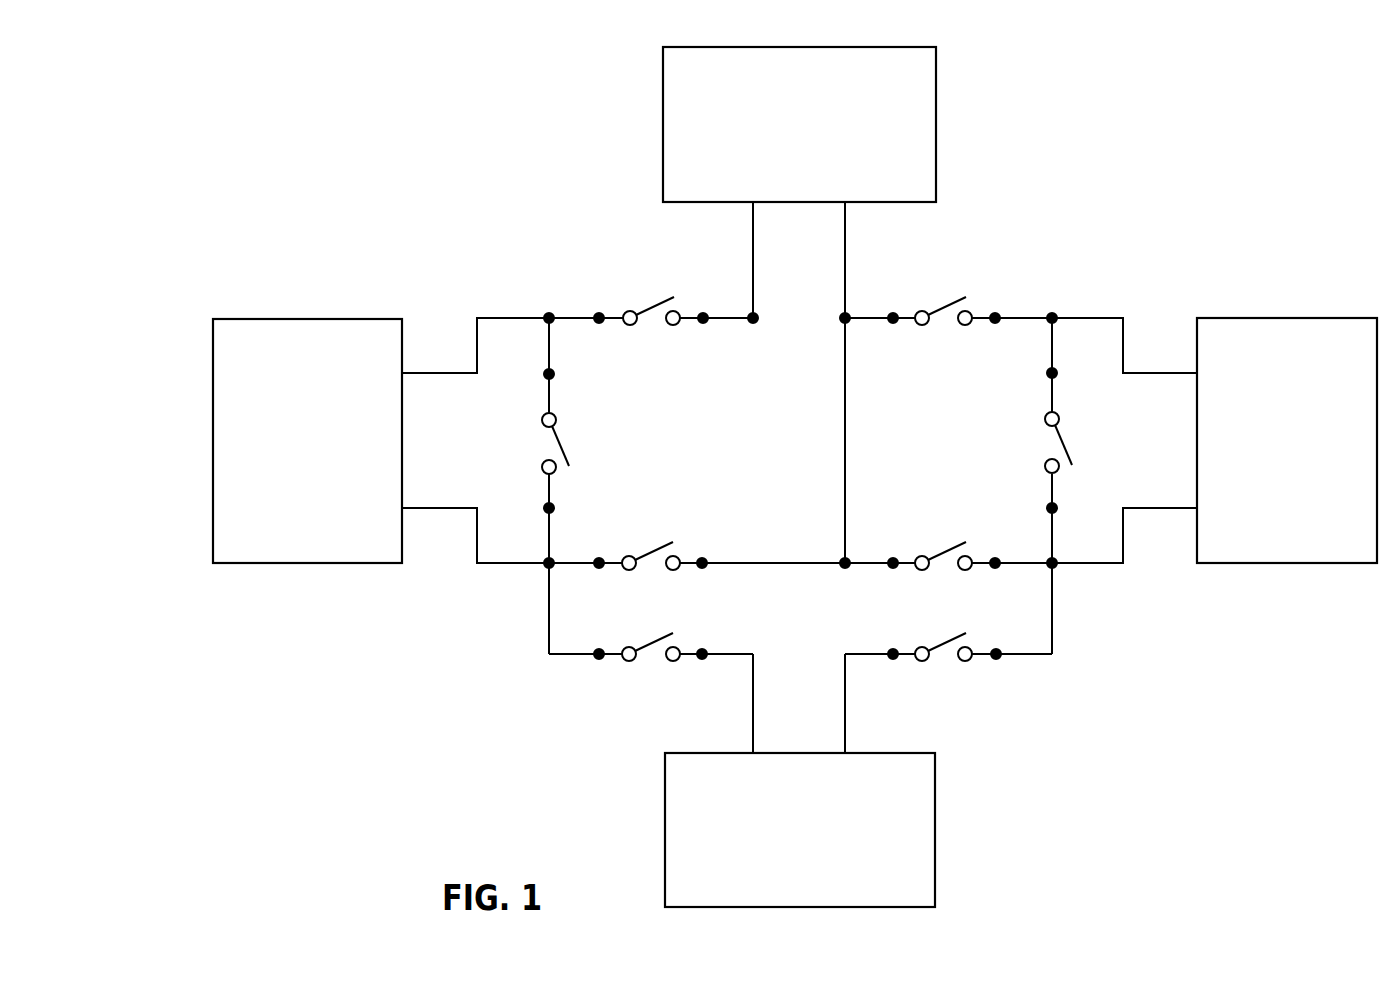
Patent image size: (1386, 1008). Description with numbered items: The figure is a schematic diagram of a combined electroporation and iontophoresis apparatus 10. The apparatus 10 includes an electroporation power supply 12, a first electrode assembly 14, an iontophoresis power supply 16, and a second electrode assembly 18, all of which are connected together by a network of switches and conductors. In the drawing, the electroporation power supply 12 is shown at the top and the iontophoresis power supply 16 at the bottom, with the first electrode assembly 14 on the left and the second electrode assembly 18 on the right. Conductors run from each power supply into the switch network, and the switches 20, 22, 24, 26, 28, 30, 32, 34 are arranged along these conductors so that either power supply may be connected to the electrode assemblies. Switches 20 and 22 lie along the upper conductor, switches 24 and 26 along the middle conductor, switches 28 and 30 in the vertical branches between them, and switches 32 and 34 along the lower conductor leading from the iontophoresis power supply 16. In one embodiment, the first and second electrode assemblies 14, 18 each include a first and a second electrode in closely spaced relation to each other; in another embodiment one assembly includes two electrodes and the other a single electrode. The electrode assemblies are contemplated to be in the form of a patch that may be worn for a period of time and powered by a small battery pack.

The combined electroporation and iontophoresis apparatus 10 is at (1148, 130).
The electroporation power supply 12 is at (937, 143).
The first electrode assembly 14 is at (281, 318).
The iontophoresis power supply 16 is at (936, 826).
The second electrode assembly 18 is at (1307, 318).
The switch 20 is at (702, 312).
The switch 22 is at (995, 312).
The switch 24 is at (702, 557).
The switch 26 is at (995, 557).
The switch 28 is at (555, 374).
The switch 30 is at (1048, 373).
The switch 32 is at (704, 663).
The switch 34 is at (996, 663).